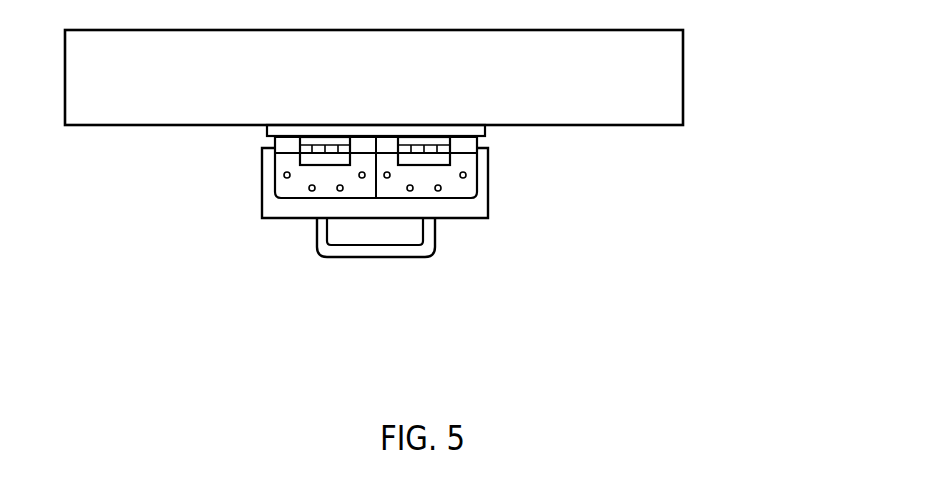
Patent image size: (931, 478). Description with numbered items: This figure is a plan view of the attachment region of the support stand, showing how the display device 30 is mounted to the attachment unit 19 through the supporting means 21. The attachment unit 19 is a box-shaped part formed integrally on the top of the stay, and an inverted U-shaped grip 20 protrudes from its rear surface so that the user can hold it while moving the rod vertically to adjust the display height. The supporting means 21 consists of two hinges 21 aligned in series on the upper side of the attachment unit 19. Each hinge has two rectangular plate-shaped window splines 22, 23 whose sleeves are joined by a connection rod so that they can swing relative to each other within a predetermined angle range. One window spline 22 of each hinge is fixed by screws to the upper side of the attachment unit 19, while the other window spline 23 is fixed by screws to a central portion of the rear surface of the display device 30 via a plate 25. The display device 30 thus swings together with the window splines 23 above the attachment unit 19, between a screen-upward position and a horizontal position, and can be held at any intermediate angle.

The display device 30 is at (668, 80).
The plate 25 is at (485, 132).
The attachment unit 19 is at (488, 208).
The window spline 22 is at (284, 184).
The window spline 23 is at (298, 151).
The grip 20 is at (373, 257).
The supporting means 21 is at (265, 207).